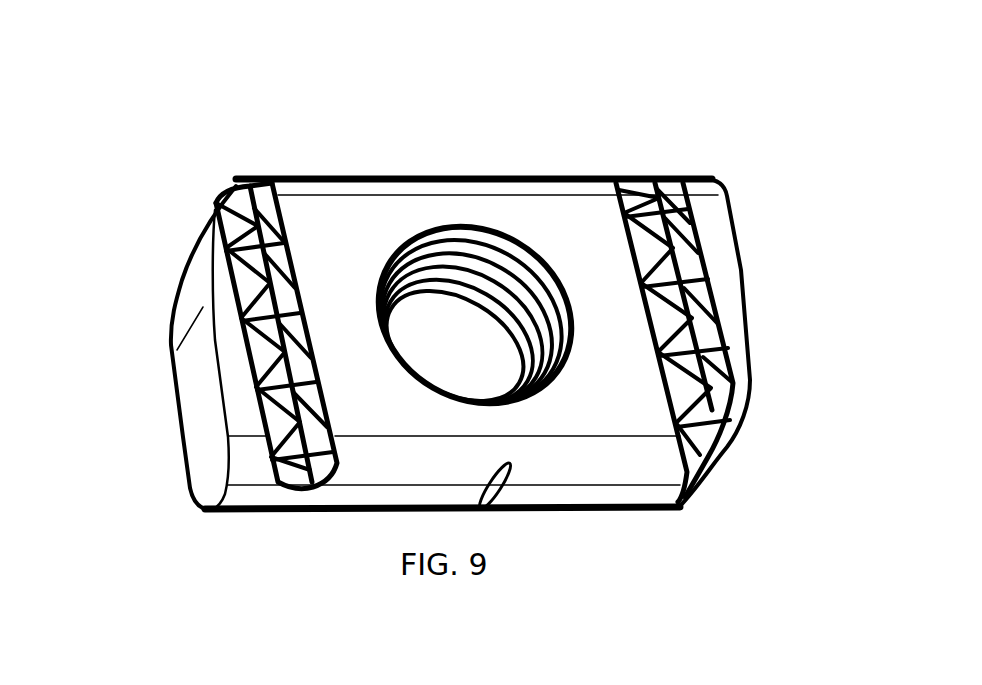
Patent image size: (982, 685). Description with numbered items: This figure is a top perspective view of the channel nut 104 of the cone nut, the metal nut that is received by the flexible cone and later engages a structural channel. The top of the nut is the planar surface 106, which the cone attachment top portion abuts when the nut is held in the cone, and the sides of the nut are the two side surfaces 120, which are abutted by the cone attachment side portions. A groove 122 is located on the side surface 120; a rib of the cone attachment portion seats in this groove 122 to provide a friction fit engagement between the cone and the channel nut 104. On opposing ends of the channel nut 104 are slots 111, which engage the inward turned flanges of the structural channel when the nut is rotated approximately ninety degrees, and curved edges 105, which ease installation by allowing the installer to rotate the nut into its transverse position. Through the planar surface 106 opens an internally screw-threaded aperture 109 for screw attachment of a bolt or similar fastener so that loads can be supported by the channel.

The channel nut 104 is at (510, 119).
The curved edges 105 is at (185, 325).
The planar surface 106 is at (362, 254).
The internally screw-threaded aperture 109 is at (478, 354).
The slots 111 is at (228, 190).
The side surfaces 120 is at (321, 178).
The groove 122 is at (497, 490).